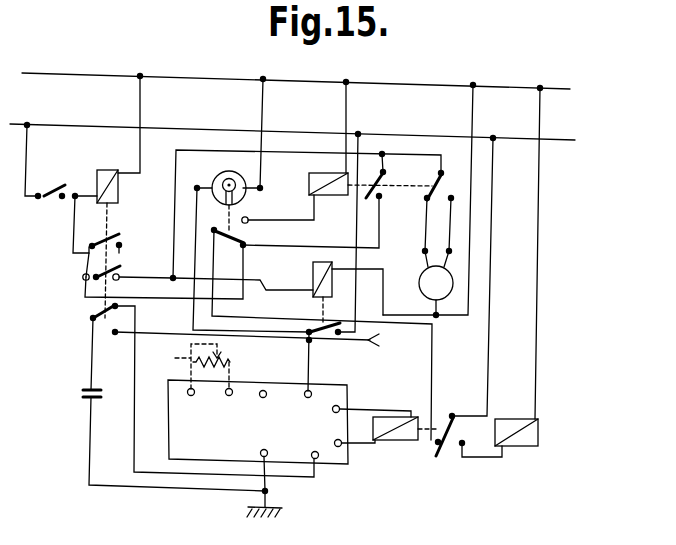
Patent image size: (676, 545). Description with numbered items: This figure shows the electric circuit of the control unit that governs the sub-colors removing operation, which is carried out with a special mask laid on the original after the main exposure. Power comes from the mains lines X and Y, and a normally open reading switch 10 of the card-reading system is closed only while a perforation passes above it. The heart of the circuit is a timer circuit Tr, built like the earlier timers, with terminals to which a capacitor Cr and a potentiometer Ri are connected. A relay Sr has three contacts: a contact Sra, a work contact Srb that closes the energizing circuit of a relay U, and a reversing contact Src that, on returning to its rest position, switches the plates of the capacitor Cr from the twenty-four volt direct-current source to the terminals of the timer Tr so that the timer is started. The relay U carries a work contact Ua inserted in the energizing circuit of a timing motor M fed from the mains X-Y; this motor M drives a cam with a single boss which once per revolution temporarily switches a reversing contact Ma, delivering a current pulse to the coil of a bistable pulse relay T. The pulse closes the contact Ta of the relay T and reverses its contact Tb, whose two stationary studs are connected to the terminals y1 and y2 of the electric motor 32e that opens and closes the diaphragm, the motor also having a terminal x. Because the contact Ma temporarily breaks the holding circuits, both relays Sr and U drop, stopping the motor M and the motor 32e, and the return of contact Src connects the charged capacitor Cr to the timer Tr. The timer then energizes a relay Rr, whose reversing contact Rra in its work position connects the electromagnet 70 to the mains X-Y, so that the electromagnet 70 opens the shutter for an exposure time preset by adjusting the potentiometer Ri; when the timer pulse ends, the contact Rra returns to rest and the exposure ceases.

The mains line X is at (304, 86).
The mains line Y is at (300, 136).
The reading switch 10 is at (50, 199).
The relay Sr is at (99, 169).
The contact of relay Sr Sra is at (116, 236).
The work contact of relay Sr Srb is at (118, 269).
The reversing contact of relay Sr Src is at (92, 318).
The capacitor Cr is at (80, 393).
The timing device motor M is at (214, 180).
The reversing contact Ma is at (246, 241).
The pulse relay T is at (308, 178).
The contact of relay T Ta is at (387, 174).
The reversing contact of relay T Tb is at (450, 178).
The motor terminal y1 is at (423, 251).
The motor terminal y2 is at (451, 251).
The electric motor 32e is at (449, 288).
The motor terminal x is at (439, 319).
The relay U is at (312, 270).
The work contact of relay U Ua is at (314, 330).
The timer circuit Tr is at (262, 361).
The potentiometer Ri is at (191, 366).
The relay Rr is at (401, 441).
The reversing contact of relay Rr Rra is at (443, 458).
The electromagnet 70 is at (538, 432).